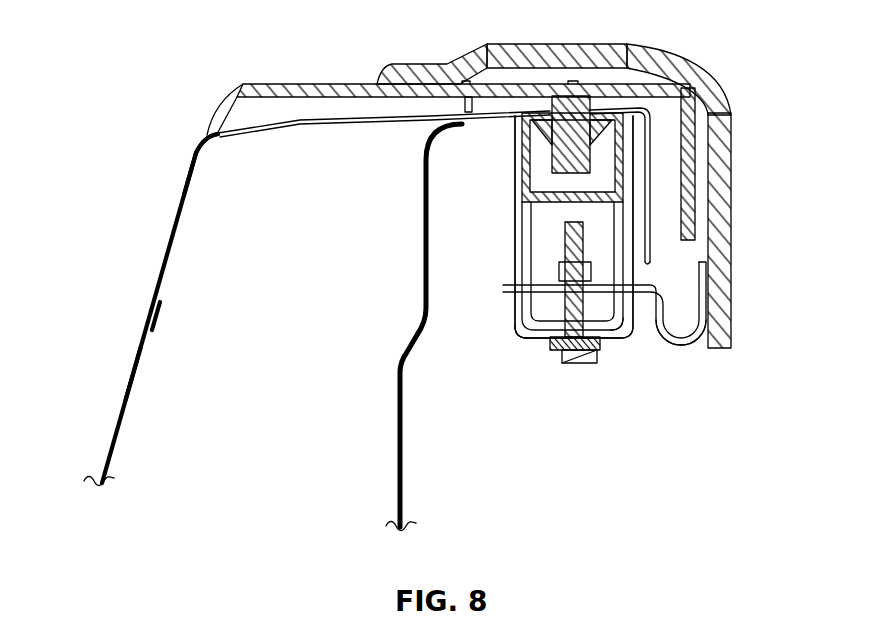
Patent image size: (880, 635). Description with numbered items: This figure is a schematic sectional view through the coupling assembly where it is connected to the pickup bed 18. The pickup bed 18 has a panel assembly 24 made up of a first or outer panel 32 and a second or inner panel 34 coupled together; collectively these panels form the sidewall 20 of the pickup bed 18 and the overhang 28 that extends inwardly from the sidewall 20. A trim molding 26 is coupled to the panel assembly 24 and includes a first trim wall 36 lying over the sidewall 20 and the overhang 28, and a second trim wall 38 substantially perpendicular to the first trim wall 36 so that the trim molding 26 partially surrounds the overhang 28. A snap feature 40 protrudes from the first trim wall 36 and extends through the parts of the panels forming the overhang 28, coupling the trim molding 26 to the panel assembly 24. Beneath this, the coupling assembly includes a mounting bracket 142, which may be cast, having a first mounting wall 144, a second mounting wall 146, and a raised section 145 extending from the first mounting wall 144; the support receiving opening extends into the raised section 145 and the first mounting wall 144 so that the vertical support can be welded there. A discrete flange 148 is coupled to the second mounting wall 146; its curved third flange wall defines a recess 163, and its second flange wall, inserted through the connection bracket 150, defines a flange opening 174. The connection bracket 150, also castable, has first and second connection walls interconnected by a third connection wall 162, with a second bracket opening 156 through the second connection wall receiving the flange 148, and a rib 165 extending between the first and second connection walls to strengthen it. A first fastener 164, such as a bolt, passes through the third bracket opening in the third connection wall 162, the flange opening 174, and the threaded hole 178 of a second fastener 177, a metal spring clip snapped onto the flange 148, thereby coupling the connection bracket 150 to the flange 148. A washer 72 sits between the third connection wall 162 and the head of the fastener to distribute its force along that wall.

The pickup bed 18 is at (155, 262).
The sidewall 20 is at (135, 353).
The panel assembly 24 is at (126, 305).
The first panel 32 is at (189, 174).
The trim molding 26 is at (293, 83).
The first trim wall 36 is at (367, 83).
The first mounting wall 144 is at (433, 63).
The raised section 145 is at (590, 43).
The mounting bracket 142 is at (707, 73).
The second mounting wall 146 is at (720, 230).
The second trim wall 38 is at (686, 142).
The overhang 28 is at (650, 112).
The snap feature 40 is at (552, 107).
The rib 165 is at (547, 192).
The threaded hole 178 is at (550, 213).
The second bracket opening 156 is at (514, 236).
The connection bracket 150 is at (514, 326).
The first fastener 164 is at (527, 325).
The washer 72 is at (610, 332).
The second panel 34 is at (420, 278).
The flange 148 is at (644, 300).
The recess 163 is at (689, 340).
The second fastener 177 is at (557, 280).
The third connection wall 162 is at (550, 348).
The flange opening 174 is at (576, 348).